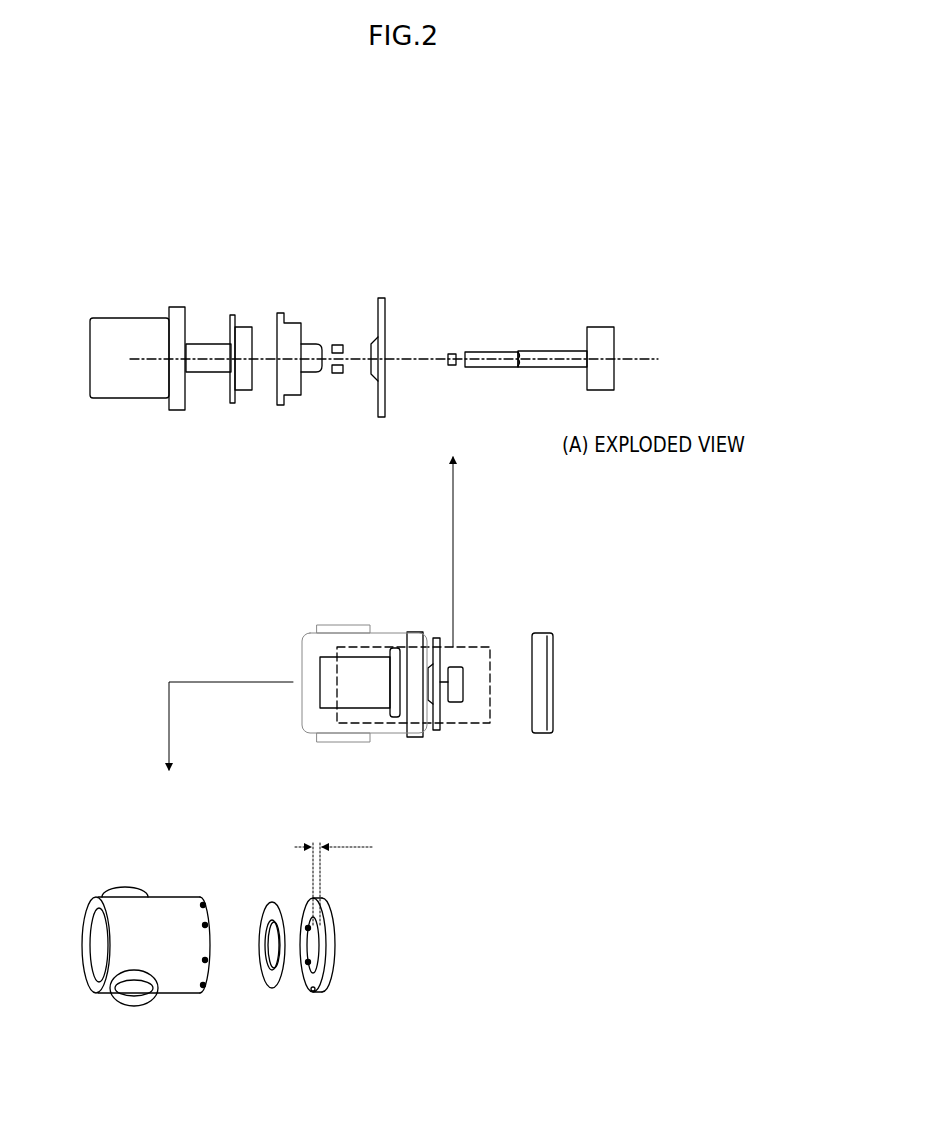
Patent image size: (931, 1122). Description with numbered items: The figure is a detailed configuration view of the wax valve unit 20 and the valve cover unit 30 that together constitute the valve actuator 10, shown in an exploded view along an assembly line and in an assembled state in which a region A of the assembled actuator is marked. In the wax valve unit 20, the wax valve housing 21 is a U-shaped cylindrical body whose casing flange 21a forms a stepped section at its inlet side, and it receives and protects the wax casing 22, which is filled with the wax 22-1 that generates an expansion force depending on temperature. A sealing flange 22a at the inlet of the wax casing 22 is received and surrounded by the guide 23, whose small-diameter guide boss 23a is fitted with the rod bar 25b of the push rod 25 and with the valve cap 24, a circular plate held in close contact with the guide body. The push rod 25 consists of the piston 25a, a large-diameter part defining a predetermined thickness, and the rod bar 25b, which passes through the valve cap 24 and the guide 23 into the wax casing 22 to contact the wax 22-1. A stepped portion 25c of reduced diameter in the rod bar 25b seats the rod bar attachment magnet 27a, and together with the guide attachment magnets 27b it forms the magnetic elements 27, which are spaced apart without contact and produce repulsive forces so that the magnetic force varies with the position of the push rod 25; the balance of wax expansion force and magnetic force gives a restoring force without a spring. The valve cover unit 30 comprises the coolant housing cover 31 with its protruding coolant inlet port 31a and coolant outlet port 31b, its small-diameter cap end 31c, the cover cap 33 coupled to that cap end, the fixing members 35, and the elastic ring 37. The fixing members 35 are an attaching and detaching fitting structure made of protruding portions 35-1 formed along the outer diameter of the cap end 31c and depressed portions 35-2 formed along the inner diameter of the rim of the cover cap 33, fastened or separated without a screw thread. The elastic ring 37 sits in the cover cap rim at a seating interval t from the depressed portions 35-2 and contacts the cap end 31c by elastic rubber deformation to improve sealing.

The valve actuator 10 is at (329, 610).
The wax valve unit 20 is at (658, 189).
The wax valve housing 21 is at (118, 331).
The casing flange 21a is at (178, 307).
The wax casing 22 is at (229, 404).
The wax 22-1 is at (215, 344).
The sealing flange 22a is at (243, 392).
The guide 23 is at (297, 322).
The guide boss 23a is at (312, 374).
The valve cap 24 is at (381, 420).
The push rod 25 is at (688, 247).
The piston 25a is at (607, 342).
The rod bar 25b is at (553, 351).
The stepped portion 25c is at (520, 352).
The magnetic elements 27 is at (460, 212).
The rod bar attachment magnet 27a is at (452, 353).
The guide attachment magnets 27b is at (335, 345).
The valve cover unit 30 is at (387, 735).
The coolant housing cover 31 is at (92, 965).
The coolant inlet port 31a is at (122, 893).
The coolant outlet port 31b is at (136, 1000).
The cap end 31c is at (203, 905).
The cover cap 33 is at (345, 968).
The fixing members 35 is at (254, 996).
The protruding portions 35-1 is at (206, 965).
The depressed portions 35-2 is at (306, 968).
The elastic ring 37 is at (265, 905).
The region A is at (470, 646).
The seating interval t is at (333, 874).